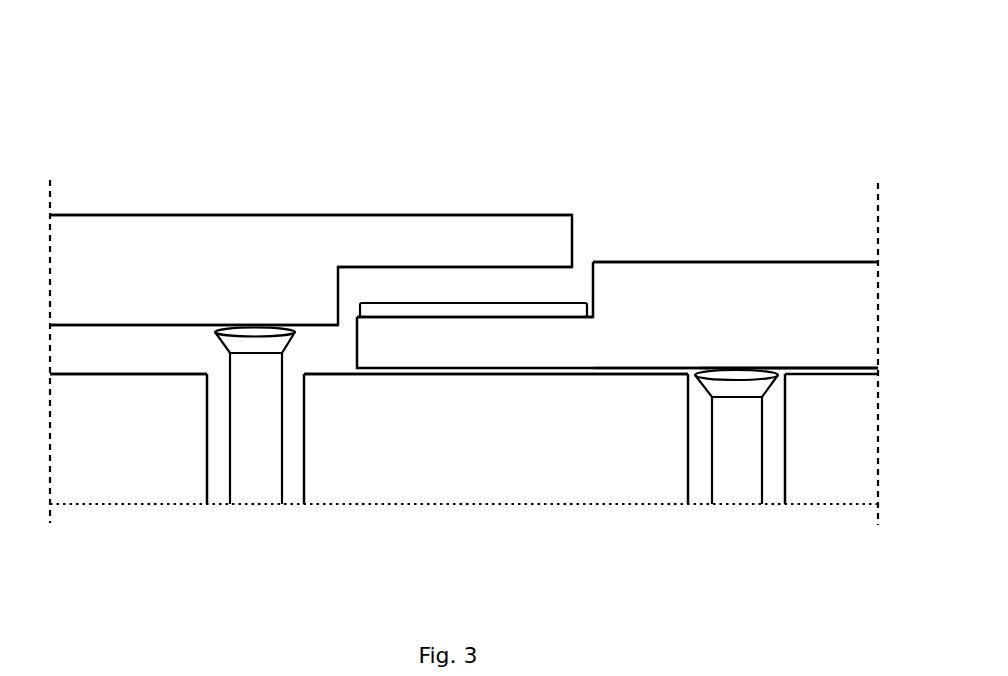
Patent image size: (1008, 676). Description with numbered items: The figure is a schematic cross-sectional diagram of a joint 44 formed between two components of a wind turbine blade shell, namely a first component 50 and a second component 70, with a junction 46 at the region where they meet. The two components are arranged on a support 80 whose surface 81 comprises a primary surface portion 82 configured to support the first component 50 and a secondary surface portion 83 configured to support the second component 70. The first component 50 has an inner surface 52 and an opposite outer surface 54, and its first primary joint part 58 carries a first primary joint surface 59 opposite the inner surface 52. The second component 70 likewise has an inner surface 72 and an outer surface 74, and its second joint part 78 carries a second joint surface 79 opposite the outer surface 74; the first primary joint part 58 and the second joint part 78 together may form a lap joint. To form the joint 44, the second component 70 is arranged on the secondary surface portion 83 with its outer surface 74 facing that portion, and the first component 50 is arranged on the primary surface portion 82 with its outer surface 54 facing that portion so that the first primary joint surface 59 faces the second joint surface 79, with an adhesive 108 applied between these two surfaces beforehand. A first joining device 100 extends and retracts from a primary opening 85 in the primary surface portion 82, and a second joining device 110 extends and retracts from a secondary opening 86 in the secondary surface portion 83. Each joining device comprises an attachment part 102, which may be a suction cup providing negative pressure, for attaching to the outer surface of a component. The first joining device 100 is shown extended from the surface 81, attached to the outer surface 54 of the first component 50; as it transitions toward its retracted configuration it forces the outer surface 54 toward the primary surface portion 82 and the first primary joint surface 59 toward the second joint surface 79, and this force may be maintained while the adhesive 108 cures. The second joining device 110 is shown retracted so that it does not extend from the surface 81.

The joint 44 is at (488, 73).
The junction 46 is at (598, 208).
The first component 50 is at (230, 230).
The inner surface 52 is at (293, 215).
The outer surface 54 is at (114, 322).
The first primary joint part 58 is at (206, 143).
The first primary joint surface 59 is at (379, 265).
The second component 70 is at (769, 283).
The inner surface 72 is at (668, 261).
The outer surface 74 is at (798, 367).
The second joint part 78 is at (742, 184).
The second joint surface 79 is at (522, 318).
The support 80 is at (429, 556).
The surface 81 is at (537, 375).
The primary surface portion 82 is at (157, 392).
The secondary surface portion 83 is at (622, 398).
The primary opening 85 is at (288, 483).
The secondary opening 86 is at (772, 487).
The first joining device 100 is at (255, 458).
The attachment part 102 is at (243, 330).
The adhesive 108 is at (463, 308).
The second joining device 110 is at (737, 468).